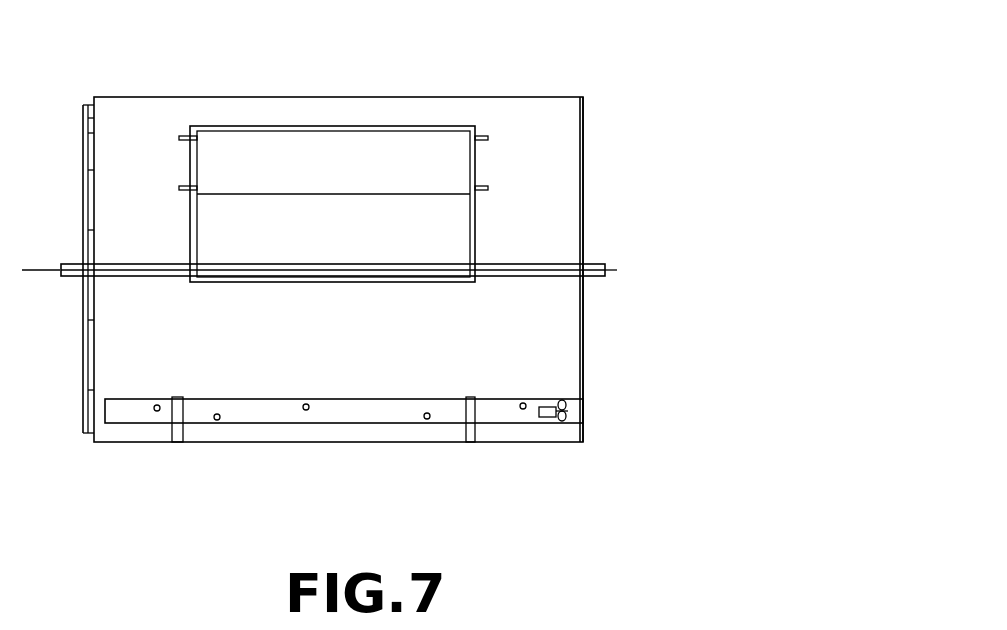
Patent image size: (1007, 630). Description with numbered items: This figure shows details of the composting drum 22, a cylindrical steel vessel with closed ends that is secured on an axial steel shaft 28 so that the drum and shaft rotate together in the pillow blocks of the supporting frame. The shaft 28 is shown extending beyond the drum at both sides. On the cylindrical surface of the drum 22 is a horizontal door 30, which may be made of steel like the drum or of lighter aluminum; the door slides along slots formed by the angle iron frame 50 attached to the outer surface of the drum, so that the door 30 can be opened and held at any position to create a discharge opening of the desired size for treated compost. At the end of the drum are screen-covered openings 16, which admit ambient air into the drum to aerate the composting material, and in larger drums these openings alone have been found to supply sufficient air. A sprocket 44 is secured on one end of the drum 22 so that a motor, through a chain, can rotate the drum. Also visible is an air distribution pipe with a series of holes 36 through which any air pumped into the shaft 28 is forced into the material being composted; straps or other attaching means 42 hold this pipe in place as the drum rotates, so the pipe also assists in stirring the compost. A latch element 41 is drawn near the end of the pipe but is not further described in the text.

The openings 16 is at (585, 408).
The drum 22 is at (132, 97).
The shaft 28 is at (597, 263).
The door 30 is at (370, 163).
The holes 36 is at (428, 413).
The latch 41 is at (548, 420).
The straps 42 is at (177, 442).
The sprocket 44 is at (85, 104).
The frame 50 is at (478, 128).